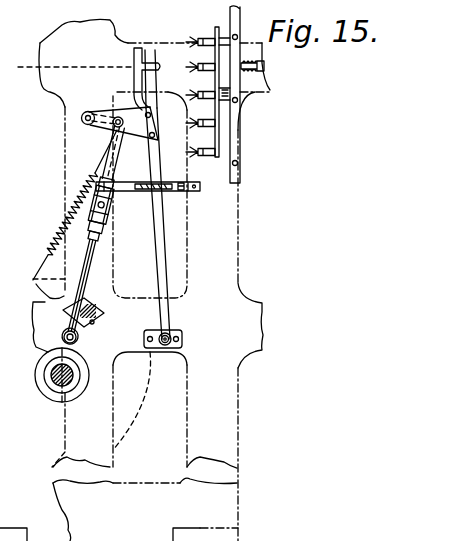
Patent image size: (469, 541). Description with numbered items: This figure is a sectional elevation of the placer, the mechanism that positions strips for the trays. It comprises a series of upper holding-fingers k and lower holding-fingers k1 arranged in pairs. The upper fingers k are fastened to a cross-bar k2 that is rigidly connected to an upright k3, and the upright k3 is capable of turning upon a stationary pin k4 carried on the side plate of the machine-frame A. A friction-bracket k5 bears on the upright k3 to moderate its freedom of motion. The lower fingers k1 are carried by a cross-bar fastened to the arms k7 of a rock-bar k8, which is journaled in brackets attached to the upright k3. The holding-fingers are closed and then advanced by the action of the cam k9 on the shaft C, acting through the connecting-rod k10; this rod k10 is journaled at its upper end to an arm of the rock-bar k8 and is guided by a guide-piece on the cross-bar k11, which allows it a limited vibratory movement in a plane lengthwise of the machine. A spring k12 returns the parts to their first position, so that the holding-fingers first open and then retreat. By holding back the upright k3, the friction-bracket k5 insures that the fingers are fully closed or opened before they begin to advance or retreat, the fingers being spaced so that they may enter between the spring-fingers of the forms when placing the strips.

The upper holding-finger k is at (147, 78).
The lower holding-finger k1 is at (160, 71).
The cross-bar k2 is at (158, 223).
The upright k3 is at (124, 123).
The stationary pin k4 is at (172, 333).
The friction-bracket k5 is at (141, 191).
The arm k7 is at (118, 110).
The rock-bar k8 is at (83, 120).
The cam k9 is at (45, 357).
The connecting-rod k10 is at (91, 256).
The cross-bar with guide-piece k11 is at (88, 300).
The spring k12 is at (52, 253).
The shaft C is at (81, 368).
The machine-frame A is at (135, 280).